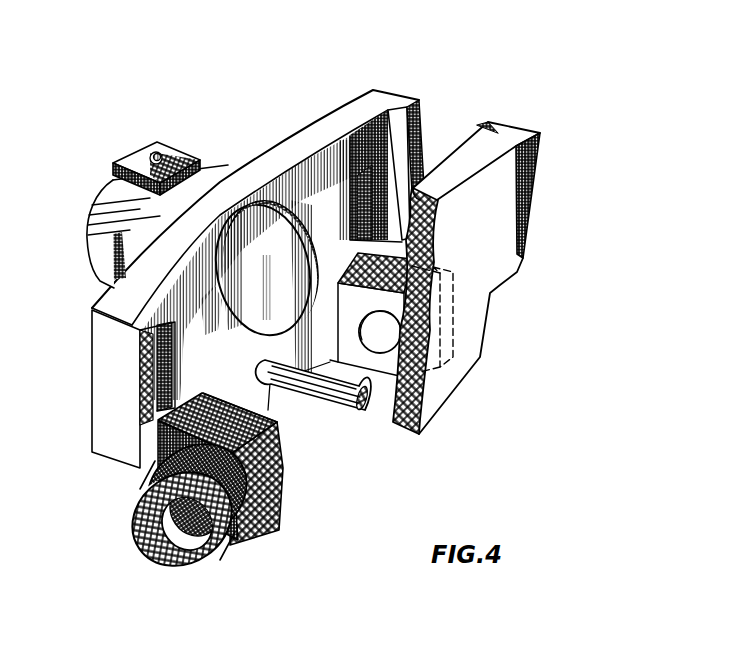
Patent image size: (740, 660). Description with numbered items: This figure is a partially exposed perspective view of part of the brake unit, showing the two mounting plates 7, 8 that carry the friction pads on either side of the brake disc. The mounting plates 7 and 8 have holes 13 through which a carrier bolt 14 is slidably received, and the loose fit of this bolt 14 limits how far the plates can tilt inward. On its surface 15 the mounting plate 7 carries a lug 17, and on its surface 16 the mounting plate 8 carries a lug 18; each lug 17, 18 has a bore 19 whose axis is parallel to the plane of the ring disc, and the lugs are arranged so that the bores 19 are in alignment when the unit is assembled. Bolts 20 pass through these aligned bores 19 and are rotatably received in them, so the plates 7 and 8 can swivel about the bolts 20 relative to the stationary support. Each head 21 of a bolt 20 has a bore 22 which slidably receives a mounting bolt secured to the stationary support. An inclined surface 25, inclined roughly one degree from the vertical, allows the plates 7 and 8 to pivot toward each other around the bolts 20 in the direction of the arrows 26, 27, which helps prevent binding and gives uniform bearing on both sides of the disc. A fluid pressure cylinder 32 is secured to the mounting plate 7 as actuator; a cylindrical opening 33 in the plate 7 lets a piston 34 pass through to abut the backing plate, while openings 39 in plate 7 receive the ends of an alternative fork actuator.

The mounting plate 7 is at (278, 157).
The mounting plate 8 is at (528, 181).
The holes 13 is at (273, 381).
The carrier bolt 14 is at (315, 382).
The surface 15 is at (352, 132).
The surface 16 is at (450, 162).
The lug 17 is at (507, 271).
The lug 18 is at (430, 366).
The bore 19 is at (373, 342).
The bolts 20 is at (177, 582).
The heads 21 is at (150, 533).
The bore 22 is at (180, 543).
The inclined surface 25 is at (338, 305).
The arrow 26 is at (47, 403).
The arrow 27 is at (564, 380).
The fluid pressure cylinder 32 is at (202, 190).
The cylindrical opening 33 is at (310, 237).
The piston 34 is at (237, 303).
The openings 39 is at (365, 195).